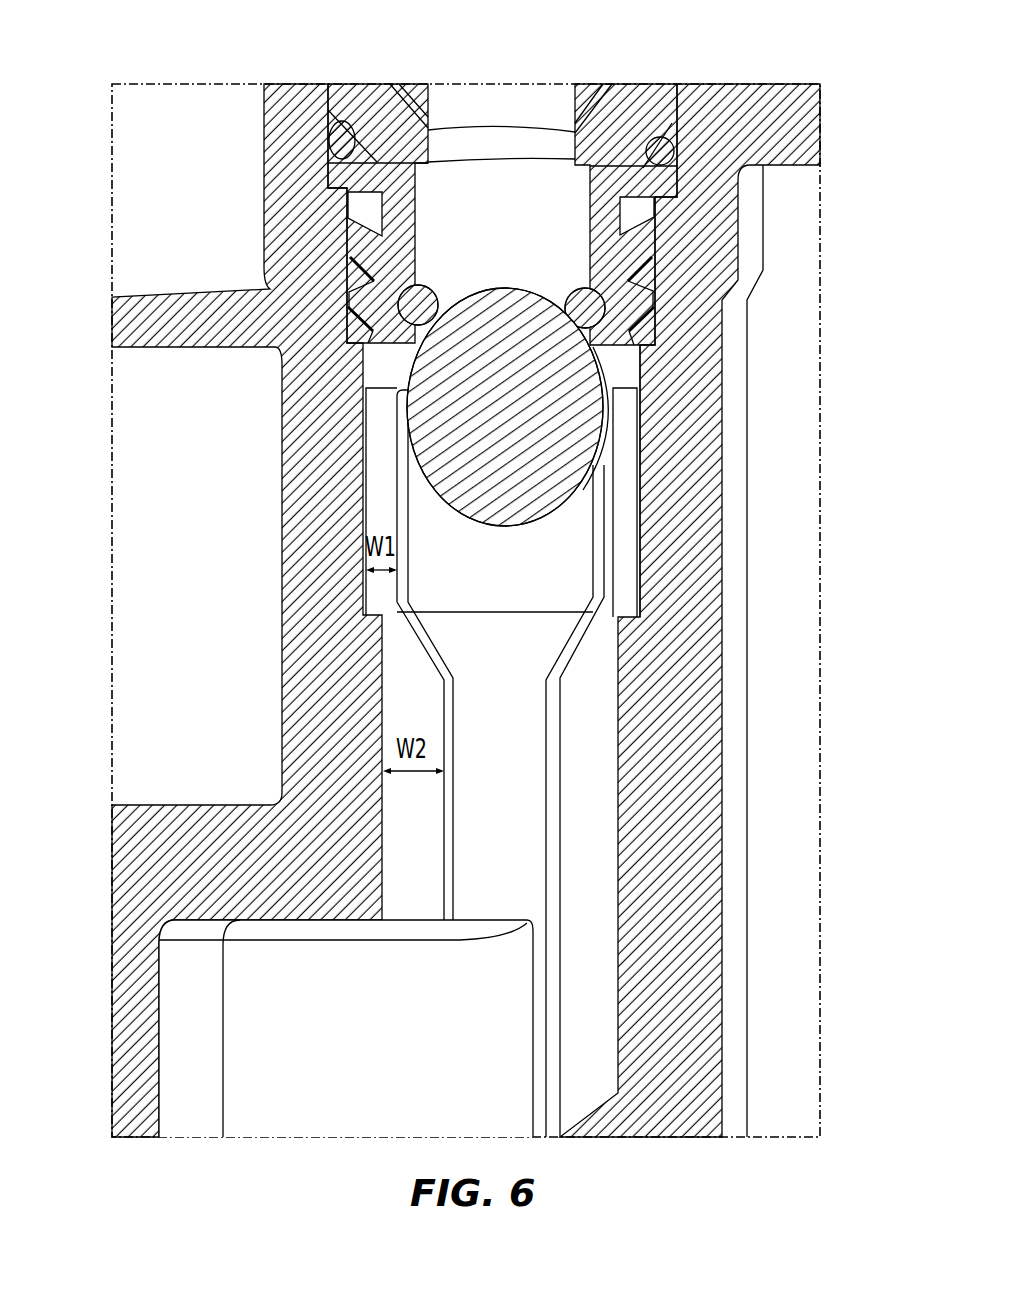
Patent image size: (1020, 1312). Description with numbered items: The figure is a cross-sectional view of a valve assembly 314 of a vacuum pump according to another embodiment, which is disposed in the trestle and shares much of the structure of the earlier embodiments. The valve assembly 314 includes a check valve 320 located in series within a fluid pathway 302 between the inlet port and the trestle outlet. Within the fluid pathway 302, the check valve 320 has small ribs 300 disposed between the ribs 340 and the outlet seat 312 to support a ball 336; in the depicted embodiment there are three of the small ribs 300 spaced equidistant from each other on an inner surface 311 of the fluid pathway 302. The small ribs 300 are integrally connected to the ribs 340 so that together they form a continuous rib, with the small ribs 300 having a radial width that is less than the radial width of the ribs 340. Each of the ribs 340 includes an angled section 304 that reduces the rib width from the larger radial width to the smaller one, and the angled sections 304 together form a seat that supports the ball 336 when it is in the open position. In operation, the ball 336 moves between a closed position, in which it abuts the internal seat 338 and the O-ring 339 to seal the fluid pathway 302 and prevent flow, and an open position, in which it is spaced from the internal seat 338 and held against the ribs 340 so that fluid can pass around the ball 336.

The valve assembly 314 is at (78, 271).
The check valve 320 is at (213, 246).
The outlet seat 312 is at (623, 120).
The fluid pathway 302 is at (503, 105).
The internal seat 338 is at (650, 268).
The O-ring 339 is at (660, 308).
The inner surface 311 is at (645, 372).
The small ribs 300 is at (383, 527).
The angled section 304 is at (423, 648).
The ball 336 is at (477, 450).
The ribs 340 is at (421, 845).